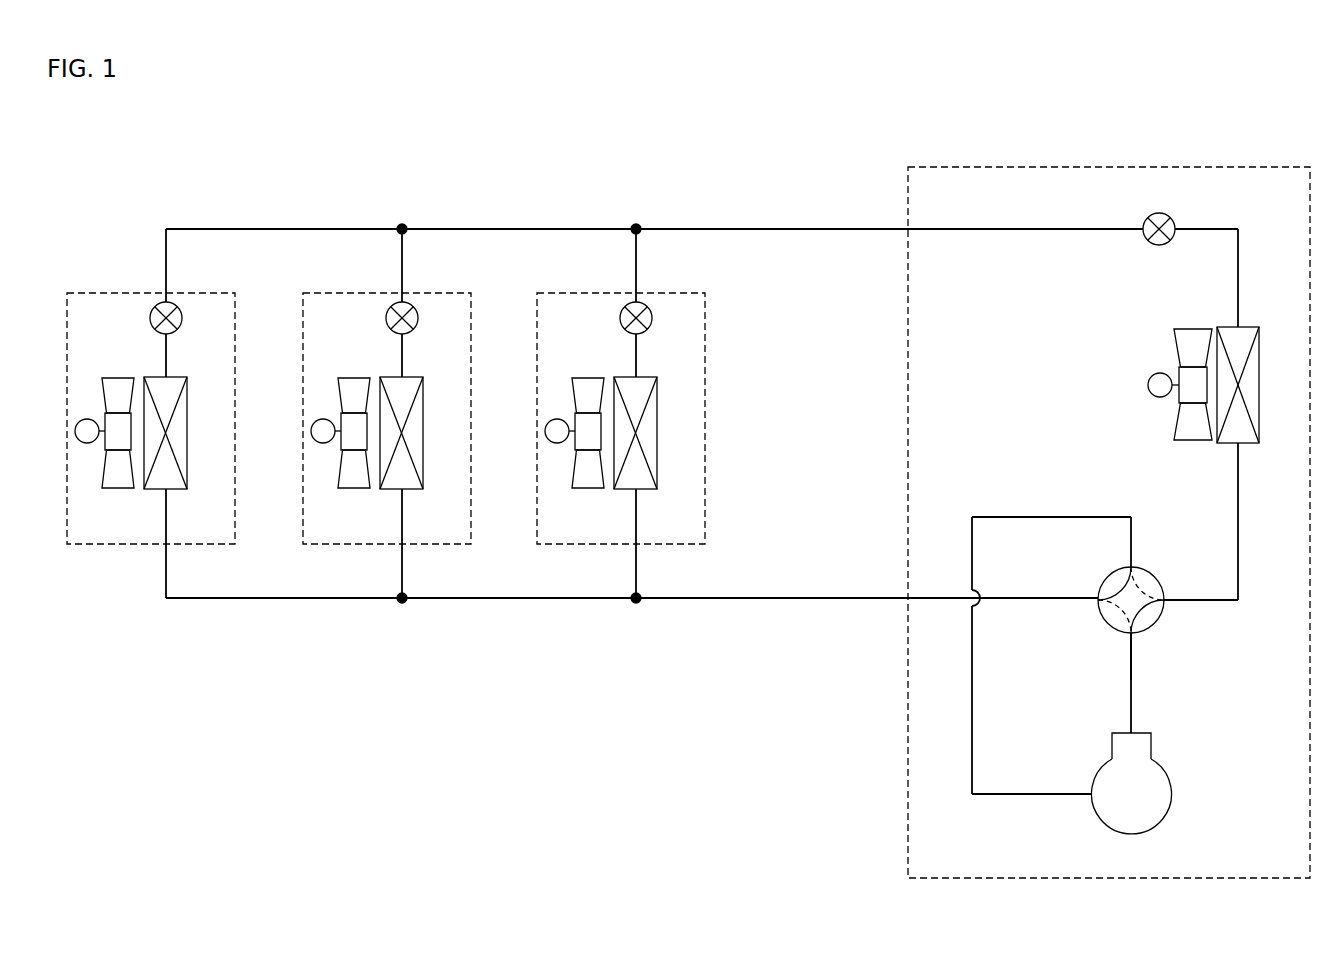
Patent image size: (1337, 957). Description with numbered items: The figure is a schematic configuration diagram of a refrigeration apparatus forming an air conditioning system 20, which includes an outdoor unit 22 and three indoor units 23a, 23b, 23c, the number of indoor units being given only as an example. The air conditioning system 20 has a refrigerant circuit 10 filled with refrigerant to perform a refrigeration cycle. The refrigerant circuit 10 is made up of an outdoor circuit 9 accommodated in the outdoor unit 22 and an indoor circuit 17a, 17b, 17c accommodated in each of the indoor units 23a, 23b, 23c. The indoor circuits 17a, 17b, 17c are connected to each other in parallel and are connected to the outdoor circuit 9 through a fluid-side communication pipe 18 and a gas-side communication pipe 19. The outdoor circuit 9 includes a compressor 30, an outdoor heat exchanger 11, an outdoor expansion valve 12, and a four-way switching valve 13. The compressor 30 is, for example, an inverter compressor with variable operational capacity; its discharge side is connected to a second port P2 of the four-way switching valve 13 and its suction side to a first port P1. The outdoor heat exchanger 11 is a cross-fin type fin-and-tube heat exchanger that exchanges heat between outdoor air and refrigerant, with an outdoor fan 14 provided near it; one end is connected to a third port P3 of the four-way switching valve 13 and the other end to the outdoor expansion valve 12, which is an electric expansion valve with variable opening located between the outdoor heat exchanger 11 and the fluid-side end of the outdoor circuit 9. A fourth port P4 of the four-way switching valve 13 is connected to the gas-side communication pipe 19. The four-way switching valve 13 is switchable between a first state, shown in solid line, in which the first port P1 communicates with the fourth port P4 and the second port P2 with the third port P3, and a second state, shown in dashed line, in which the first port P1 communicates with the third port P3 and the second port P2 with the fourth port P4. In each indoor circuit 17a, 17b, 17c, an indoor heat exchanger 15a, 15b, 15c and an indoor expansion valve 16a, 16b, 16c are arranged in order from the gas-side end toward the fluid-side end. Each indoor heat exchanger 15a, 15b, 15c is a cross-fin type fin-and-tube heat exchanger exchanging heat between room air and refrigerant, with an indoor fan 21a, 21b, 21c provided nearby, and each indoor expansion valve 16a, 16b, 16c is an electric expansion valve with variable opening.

The outdoor circuit 9 is at (1241, 555).
The refrigerant circuit 10 is at (844, 608).
The outdoor heat exchanger 11 is at (1250, 323).
The outdoor expansion valve 12 is at (1159, 246).
The four-way switching valve 13 is at (1152, 573).
The outdoor fan 14 is at (1147, 385).
The indoor heat exchanger 15a is at (657, 477).
The indoor heat exchanger 15b is at (423, 477).
The indoor heat exchanger 15c is at (187, 477).
The indoor expansion valve 16a is at (652, 326).
The indoor expansion valve 16b is at (418, 326).
The indoor expansion valve 16c is at (182, 326).
The indoor circuit 17a is at (630, 500).
The indoor circuit 17b is at (396, 500).
The indoor circuit 17c is at (160, 500).
The fluid-side communication pipe 18 is at (808, 230).
The gas-side communication pipe 19 is at (814, 597).
The air conditioning system 20 is at (1022, 127).
The indoor fan 21a is at (588, 377).
The indoor fan 21b is at (354, 377).
The indoor fan 21c is at (118, 377).
The outdoor unit 22 is at (1185, 168).
The indoor unit 23a is at (671, 293).
The indoor unit 23b is at (437, 293).
The indoor unit 23c is at (201, 293).
The compressor 30 is at (1171, 797).
The first port P1 is at (1127, 566).
The second port P2 is at (1131, 633).
The third port P3 is at (1166, 598).
The fourth port P4 is at (1099, 604).